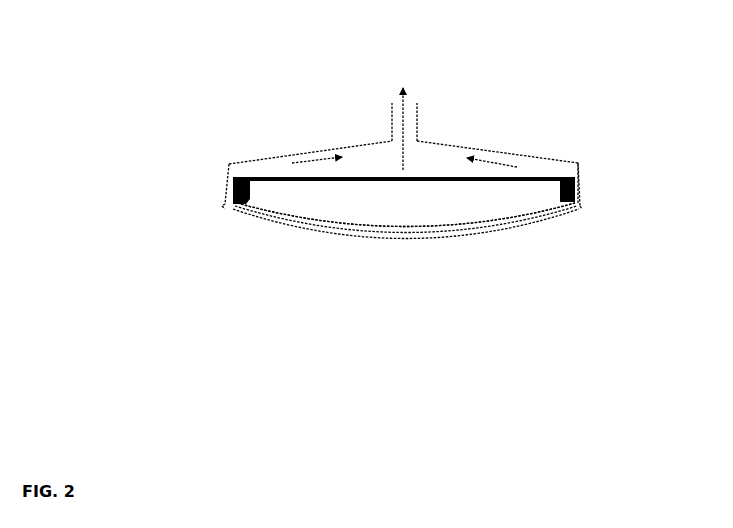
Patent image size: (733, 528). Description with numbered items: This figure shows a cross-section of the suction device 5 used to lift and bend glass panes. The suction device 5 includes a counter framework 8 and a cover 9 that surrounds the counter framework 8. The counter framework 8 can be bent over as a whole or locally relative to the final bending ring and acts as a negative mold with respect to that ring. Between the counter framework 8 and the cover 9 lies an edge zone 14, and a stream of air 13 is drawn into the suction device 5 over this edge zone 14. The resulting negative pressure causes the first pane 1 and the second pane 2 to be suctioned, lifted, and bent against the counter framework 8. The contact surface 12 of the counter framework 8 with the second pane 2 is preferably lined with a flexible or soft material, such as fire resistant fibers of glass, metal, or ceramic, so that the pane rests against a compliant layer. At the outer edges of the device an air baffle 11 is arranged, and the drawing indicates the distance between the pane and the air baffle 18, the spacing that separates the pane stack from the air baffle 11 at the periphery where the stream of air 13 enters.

The first pane 1 is at (503, 208).
The second pane 2 is at (457, 238).
The suction device 5 is at (338, 98).
The counter framework 8 is at (443, 170).
The cover 9 is at (324, 143).
The air baffle 11 is at (218, 185).
The contact surface 12 is at (251, 203).
The stream of air 13 is at (390, 132).
The edge zone 14 is at (583, 209).
The distance between the pane and the air baffle 18 is at (228, 211).